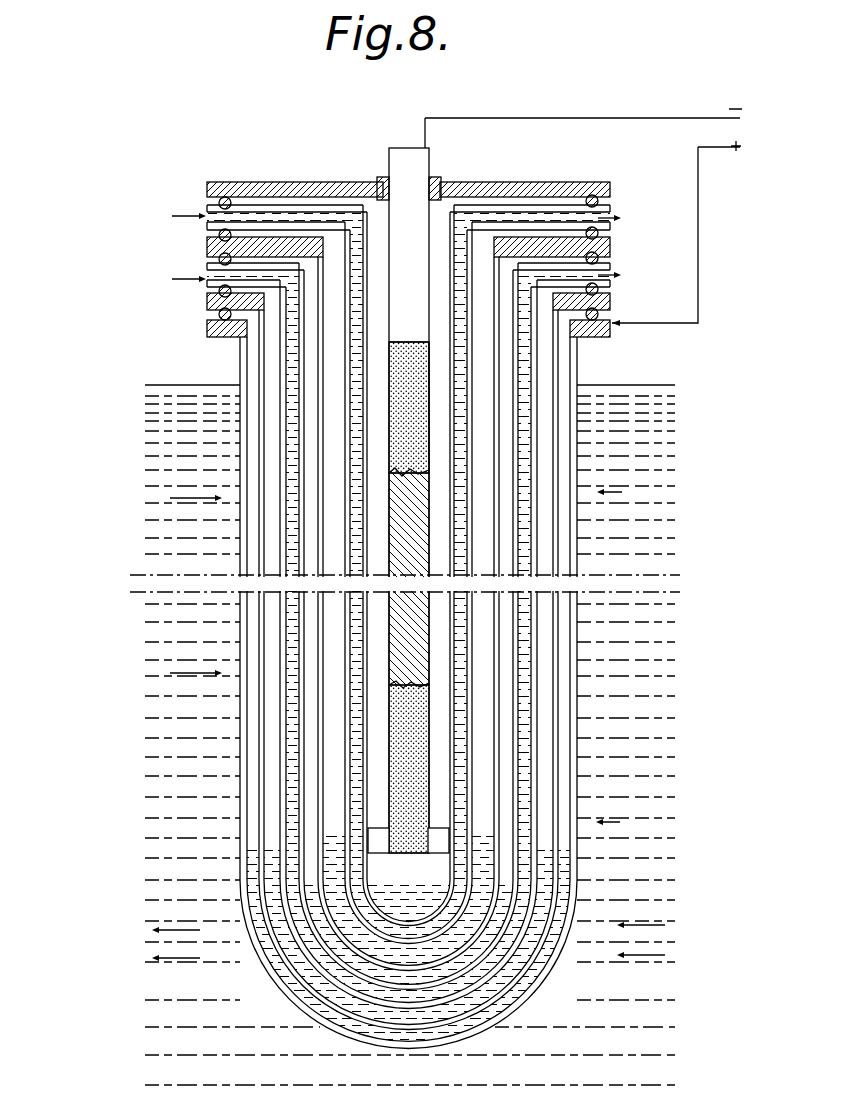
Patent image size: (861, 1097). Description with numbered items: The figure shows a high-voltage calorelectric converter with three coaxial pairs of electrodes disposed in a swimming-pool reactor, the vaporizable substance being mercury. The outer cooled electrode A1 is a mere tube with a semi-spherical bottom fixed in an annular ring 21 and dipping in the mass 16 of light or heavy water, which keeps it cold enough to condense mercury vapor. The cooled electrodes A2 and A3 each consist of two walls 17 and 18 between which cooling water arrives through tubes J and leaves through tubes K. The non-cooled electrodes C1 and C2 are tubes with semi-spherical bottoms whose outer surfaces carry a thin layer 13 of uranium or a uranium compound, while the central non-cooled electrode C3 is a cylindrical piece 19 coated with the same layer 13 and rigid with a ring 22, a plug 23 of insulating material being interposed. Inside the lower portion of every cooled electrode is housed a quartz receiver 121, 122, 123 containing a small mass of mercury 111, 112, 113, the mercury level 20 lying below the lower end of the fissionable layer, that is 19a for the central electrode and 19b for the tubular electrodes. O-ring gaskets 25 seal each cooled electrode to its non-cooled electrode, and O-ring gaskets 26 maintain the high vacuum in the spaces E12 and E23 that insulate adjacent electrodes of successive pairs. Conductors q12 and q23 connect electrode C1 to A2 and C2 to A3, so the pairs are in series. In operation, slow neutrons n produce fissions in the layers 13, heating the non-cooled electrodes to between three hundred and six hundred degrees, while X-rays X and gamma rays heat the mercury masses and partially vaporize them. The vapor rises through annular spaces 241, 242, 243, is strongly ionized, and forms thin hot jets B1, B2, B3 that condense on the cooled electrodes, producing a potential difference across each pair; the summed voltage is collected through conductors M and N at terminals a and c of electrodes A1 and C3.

The mercury mass 111 is at (540, 968).
The mercury mass 112 is at (507, 931).
The mercury mass 113 is at (467, 903).
The receiver 121 is at (540, 880).
The receiver 122 is at (510, 866).
The receiver 123 is at (490, 852).
The layer of fissionable product 13 is at (435, 493).
The mass of light or heavy water 16 is at (180, 410).
The wall 17 is at (466, 606).
The wall 18 is at (476, 676).
The cylindrical piece 19 is at (429, 517).
The lower end of electrode 19a is at (378, 846).
The lower end of layer 19b is at (378, 858).
The mercury level 20 is at (283, 920).
The annular ring 21 is at (590, 338).
The ring 22 is at (520, 181).
The plug of insulating material 23 is at (437, 180).
The O-ring gasket 25 is at (226, 197).
The O-ring gasket 26 is at (219, 236).
The annular space 241 is at (256, 626).
The annular space 242 is at (340, 554).
The annular space 243 is at (383, 524).
The tube J is at (209, 206).
The tube K is at (596, 210).
The terminal a is at (612, 326).
The terminal c is at (433, 134).
The conductor N is at (583, 106).
The conductor M is at (676, 225).
The slow neutrons n is at (404, 519).
The conductor q23 is at (598, 235).
The conductor q12 is at (598, 296).
The cooled electrode A1 is at (590, 820).
The cooled electrode A2 is at (560, 724).
The cooled electrode A3 is at (429, 562).
The ionized hot jet of vapor B1 is at (268, 716).
The ionized hot jet of vapor B2 is at (322, 719).
The ionized hot jet of vapor B3 is at (385, 745).
The non-cooled electrode C1 is at (576, 782).
The non-cooled electrode C2 is at (520, 692).
The non-cooled electrode C3 is at (429, 375).
The evacuated space E12 is at (548, 746).
The evacuated space E23 is at (512, 676).
The X-rays X is at (408, 946).